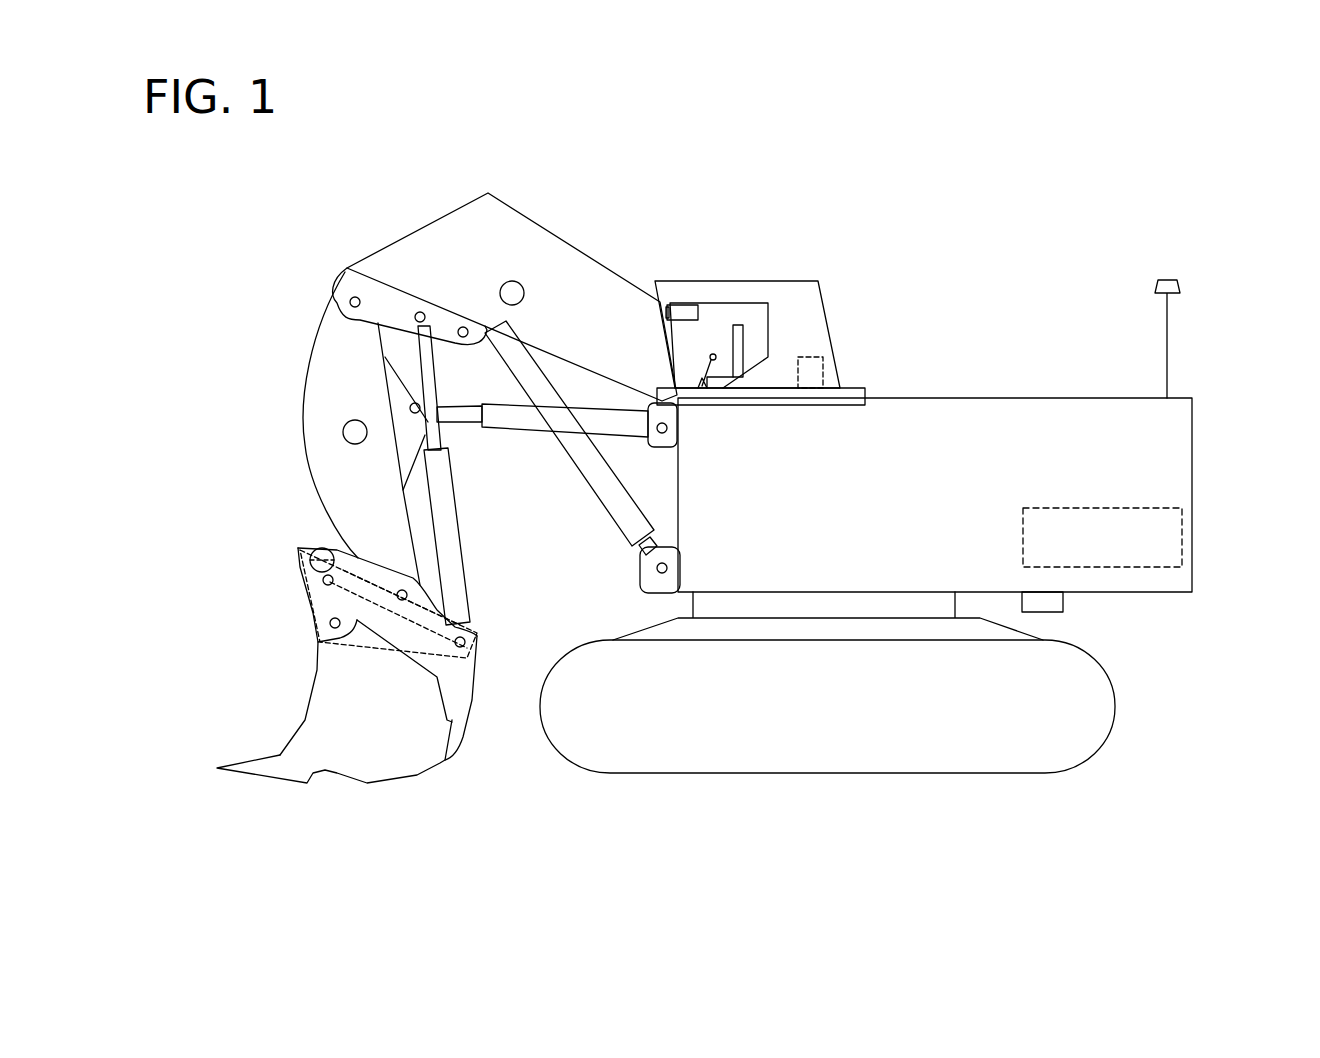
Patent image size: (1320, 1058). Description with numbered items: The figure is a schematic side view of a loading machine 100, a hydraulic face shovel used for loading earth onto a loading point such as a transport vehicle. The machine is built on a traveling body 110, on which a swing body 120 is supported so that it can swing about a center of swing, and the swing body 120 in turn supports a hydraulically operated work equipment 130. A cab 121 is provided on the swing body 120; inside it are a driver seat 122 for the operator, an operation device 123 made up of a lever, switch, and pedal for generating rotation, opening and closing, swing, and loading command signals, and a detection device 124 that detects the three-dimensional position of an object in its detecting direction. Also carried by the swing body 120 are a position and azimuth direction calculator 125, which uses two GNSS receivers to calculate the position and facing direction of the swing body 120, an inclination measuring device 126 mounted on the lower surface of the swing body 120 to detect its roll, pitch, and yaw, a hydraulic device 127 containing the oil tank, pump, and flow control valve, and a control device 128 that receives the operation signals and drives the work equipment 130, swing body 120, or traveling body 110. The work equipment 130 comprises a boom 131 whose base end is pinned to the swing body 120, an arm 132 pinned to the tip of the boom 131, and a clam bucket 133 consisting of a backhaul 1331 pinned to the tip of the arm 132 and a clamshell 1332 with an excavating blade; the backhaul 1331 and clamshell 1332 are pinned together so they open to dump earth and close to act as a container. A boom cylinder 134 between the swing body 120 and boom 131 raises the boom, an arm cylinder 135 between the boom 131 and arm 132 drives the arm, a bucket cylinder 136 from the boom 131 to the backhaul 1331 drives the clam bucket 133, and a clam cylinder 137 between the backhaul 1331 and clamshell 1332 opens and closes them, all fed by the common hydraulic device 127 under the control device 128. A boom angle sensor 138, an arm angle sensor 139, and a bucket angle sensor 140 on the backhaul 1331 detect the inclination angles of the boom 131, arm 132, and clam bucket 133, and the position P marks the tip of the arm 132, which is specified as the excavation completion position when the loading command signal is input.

The loading machine 100 is at (1044, 212).
The traveling body 110 is at (880, 775).
The swing body 120 is at (983, 398).
The cab 121 is at (795, 280).
The driver seat 122 is at (738, 323).
The operation device 123 is at (698, 345).
The detection device 124 is at (690, 303).
The position and azimuth direction calculator 125 is at (1170, 280).
The inclination measuring device 126 is at (1065, 608).
The hydraulic device 127 is at (1192, 538).
The control device 128 is at (823, 358).
The work equipment 130 is at (617, 206).
The boom 131 is at (498, 196).
The arm 132 is at (310, 357).
The clam bucket 133 is at (410, 805).
The boom cylinder 134 is at (598, 508).
The arm cylinder 135 is at (505, 432).
The bucket cylinder 136 is at (462, 539).
The clam cylinder 137 is at (482, 648).
The boom angle sensor 138 is at (519, 282).
The arm angle sensor 139 is at (343, 433).
The bucket angle sensor 140 is at (315, 550).
The backhaul 1331 is at (473, 702).
The clamshell 1332 is at (340, 776).
The position of the tip of the arm P is at (407, 596).